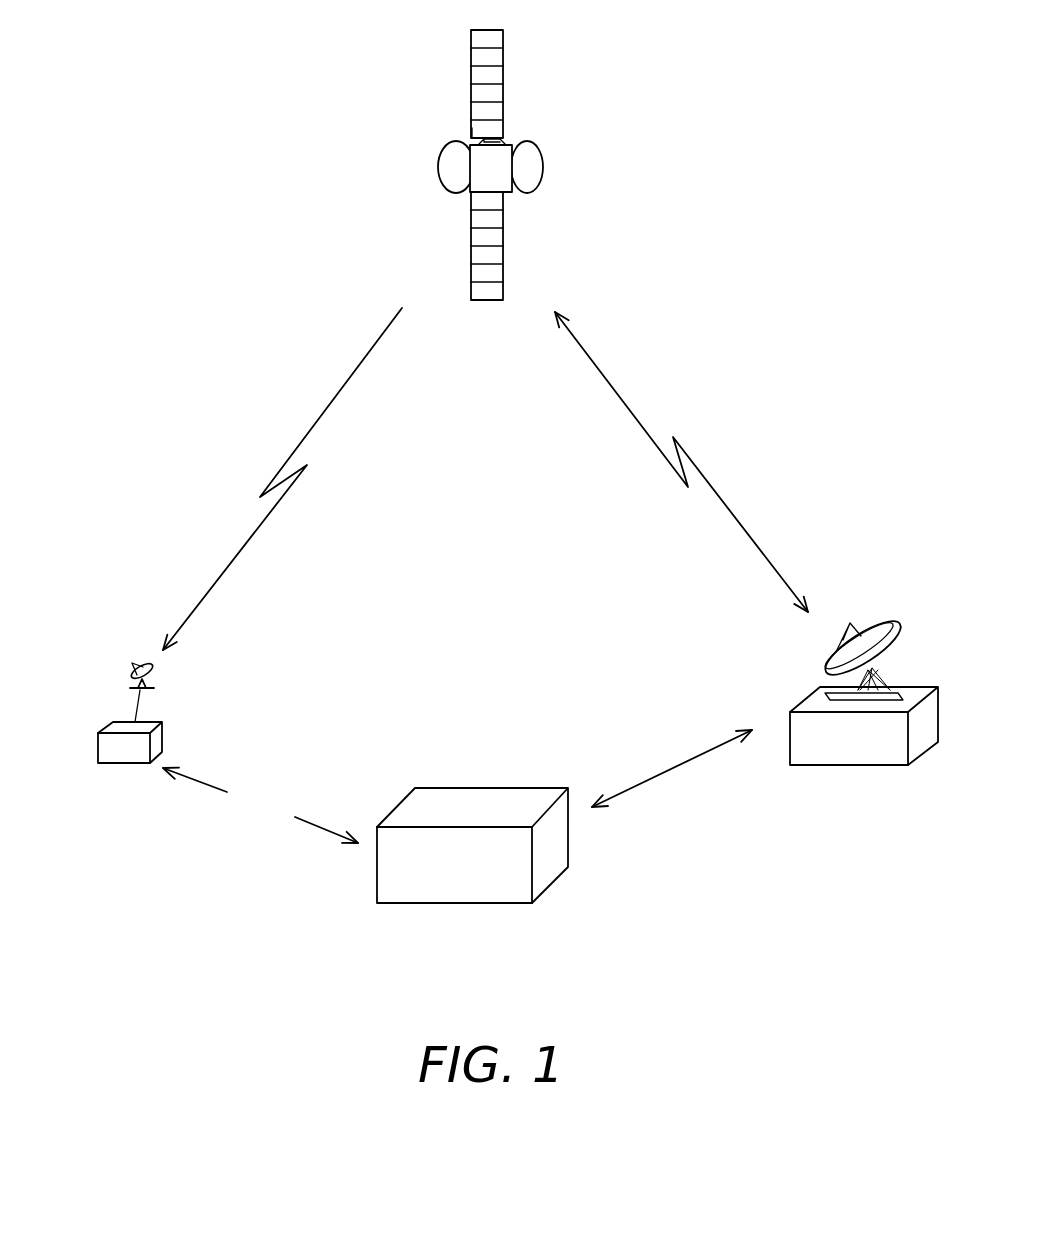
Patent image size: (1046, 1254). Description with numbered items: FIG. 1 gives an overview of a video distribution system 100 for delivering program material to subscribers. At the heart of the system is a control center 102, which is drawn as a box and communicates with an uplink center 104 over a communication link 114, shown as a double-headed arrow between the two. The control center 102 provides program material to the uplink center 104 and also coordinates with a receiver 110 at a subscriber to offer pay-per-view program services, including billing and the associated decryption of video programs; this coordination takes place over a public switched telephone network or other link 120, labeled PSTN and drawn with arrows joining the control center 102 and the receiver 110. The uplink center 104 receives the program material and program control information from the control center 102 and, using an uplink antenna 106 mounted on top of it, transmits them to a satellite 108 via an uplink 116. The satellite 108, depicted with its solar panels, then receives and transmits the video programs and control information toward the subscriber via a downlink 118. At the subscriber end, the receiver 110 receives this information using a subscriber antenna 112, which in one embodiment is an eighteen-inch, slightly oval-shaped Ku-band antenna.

The video distribution system 100 is at (795, 322).
The control center 102 is at (550, 888).
The uplink center 104 is at (843, 765).
The uplink antenna 106 is at (900, 632).
The satellite 108 is at (523, 193).
The receiver 110 is at (167, 730).
The subscriber antenna 112 is at (132, 662).
The communication link 114 is at (663, 770).
The uplink 116 is at (725, 502).
The downlink 118 is at (335, 398).
The public switched telephone network or other link 120 is at (288, 788).